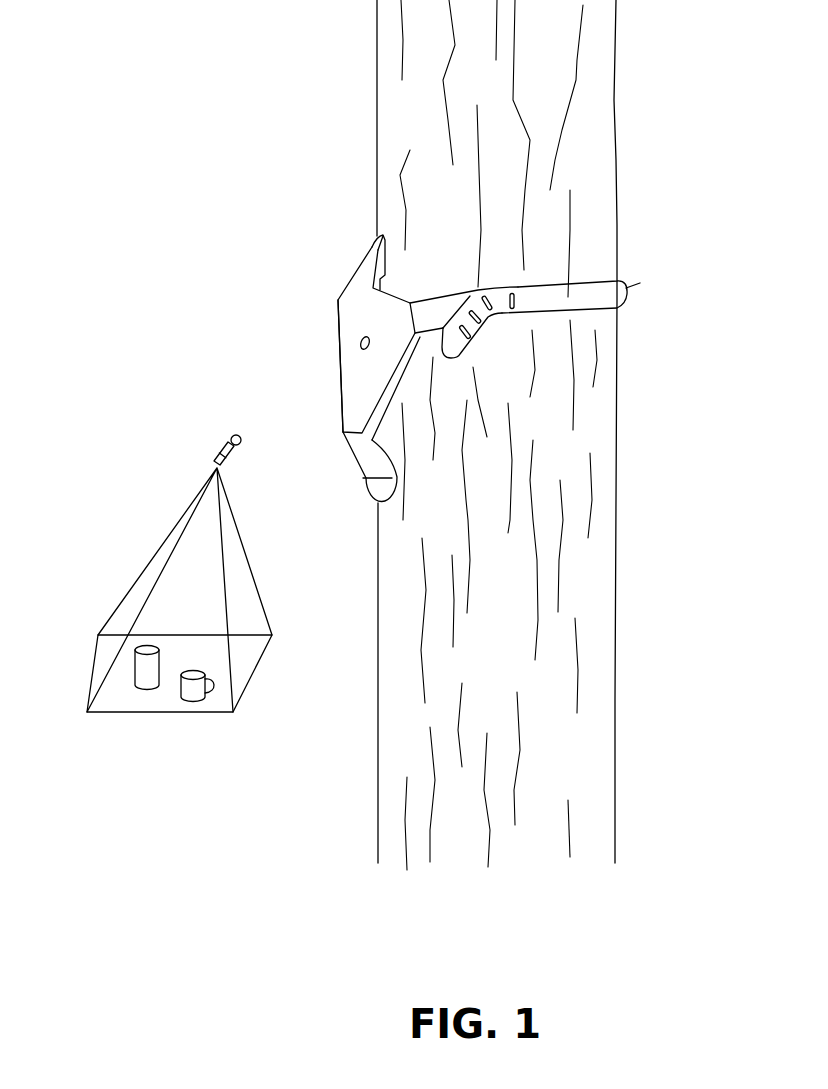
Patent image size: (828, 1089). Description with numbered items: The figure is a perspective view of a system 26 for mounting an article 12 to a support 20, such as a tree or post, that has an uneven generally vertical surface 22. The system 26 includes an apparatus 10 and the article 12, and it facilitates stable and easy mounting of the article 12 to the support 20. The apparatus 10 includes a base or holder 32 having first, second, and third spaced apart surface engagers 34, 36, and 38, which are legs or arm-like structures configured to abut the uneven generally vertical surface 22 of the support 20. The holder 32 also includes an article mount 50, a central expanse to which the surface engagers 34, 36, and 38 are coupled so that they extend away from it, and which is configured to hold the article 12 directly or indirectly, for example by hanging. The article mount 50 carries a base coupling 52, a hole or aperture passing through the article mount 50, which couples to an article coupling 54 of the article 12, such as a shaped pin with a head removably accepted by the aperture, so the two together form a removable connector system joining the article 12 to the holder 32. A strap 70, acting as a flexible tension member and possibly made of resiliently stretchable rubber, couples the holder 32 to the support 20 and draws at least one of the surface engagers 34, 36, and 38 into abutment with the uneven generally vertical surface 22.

The system 26 is at (106, 121).
The support 20 is at (388, 95).
The apparatus 10 is at (291, 201).
The first surface engager 34 is at (366, 255).
The base coupling 52 is at (362, 325).
The holder 32 is at (303, 324).
The article mount 50 is at (356, 372).
The article coupling 54 is at (219, 444).
The article 12 is at (111, 505).
The third surface engager 38 is at (378, 487).
The uneven generally vertical surface 22 is at (408, 395).
The second surface engager 36 is at (492, 288).
The strap 70 is at (626, 296).